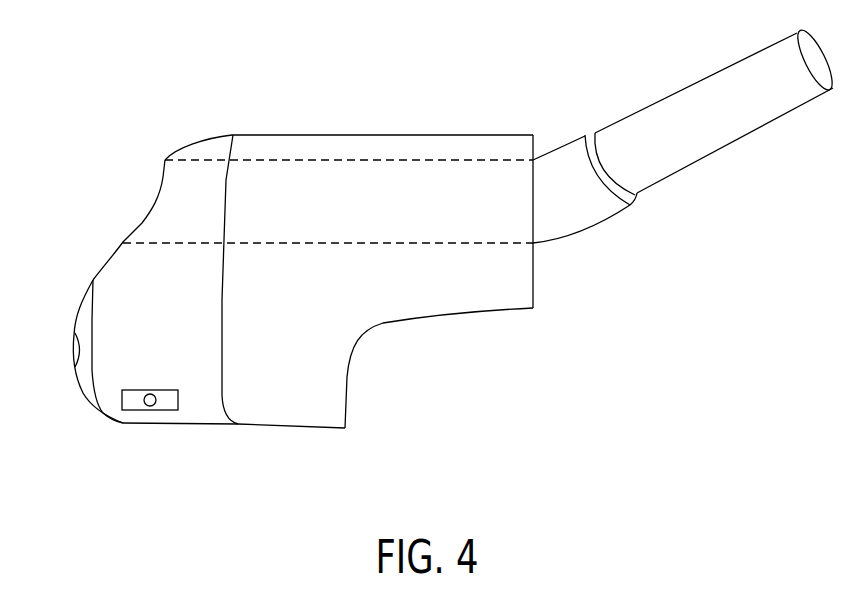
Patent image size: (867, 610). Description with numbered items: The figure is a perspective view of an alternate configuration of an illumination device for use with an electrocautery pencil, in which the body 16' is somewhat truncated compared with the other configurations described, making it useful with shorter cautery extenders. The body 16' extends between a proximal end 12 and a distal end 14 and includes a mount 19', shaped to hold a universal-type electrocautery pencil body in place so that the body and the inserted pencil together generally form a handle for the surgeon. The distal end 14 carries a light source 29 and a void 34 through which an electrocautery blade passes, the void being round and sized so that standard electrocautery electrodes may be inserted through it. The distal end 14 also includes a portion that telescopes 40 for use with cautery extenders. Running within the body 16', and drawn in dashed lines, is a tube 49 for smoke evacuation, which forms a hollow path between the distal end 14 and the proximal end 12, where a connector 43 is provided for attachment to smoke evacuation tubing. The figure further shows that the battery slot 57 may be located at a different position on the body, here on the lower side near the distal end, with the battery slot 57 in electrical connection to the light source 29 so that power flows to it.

The proximal end 12 is at (552, 372).
The distal end 14 is at (105, 467).
The body 16' is at (349, 111).
The mount 19' is at (439, 368).
The light source 29 is at (80, 317).
The void 34 is at (77, 350).
The telescoping portion 40 is at (215, 425).
The connector 43 is at (700, 113).
The tube 49 is at (445, 178).
The battery slot 57 is at (132, 398).